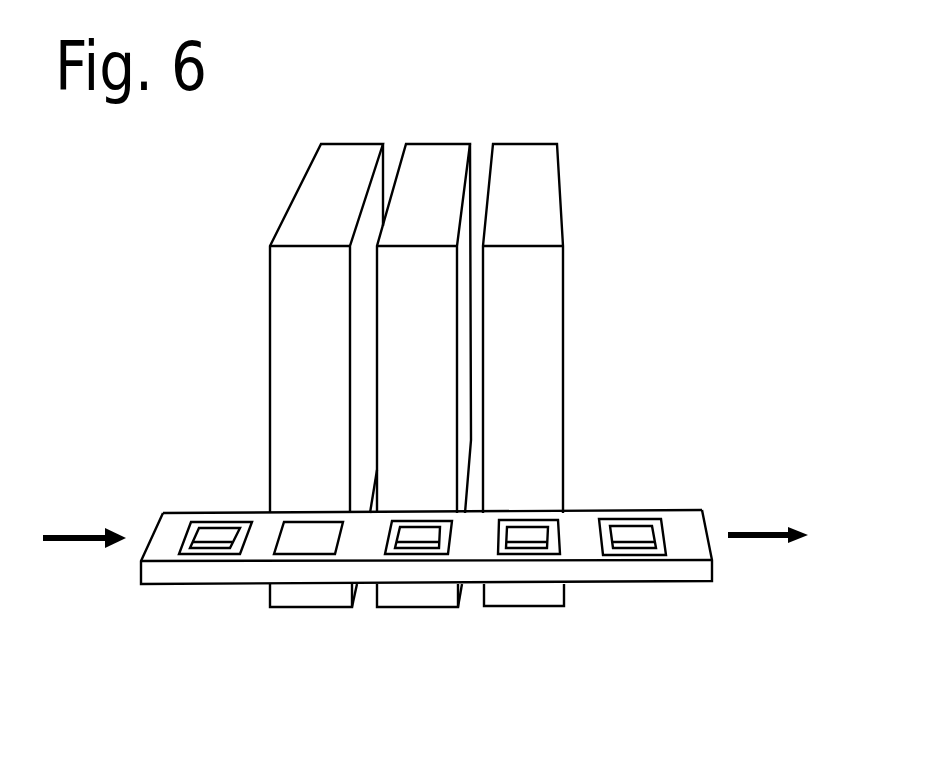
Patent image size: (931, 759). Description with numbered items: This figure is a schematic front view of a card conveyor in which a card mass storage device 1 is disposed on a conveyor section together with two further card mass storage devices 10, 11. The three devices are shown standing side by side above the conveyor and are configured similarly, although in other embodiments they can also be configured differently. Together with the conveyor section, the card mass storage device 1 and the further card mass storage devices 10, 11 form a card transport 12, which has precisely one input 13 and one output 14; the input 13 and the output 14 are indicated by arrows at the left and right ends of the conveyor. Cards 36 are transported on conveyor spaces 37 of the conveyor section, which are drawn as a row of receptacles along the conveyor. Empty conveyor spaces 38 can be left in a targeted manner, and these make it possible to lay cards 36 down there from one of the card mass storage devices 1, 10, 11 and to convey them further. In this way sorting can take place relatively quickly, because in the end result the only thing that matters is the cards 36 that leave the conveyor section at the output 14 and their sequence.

The card mass storage device 1 is at (338, 168).
The card mass storage device 10 is at (430, 178).
The card mass storage device 11 is at (528, 178).
The card transport 12 is at (158, 295).
The input 13 is at (73, 535).
The output 14 is at (762, 530).
The cards 36 is at (213, 534).
The conveyor spaces 37 is at (298, 553).
The empty conveyor spaces 38 is at (310, 538).